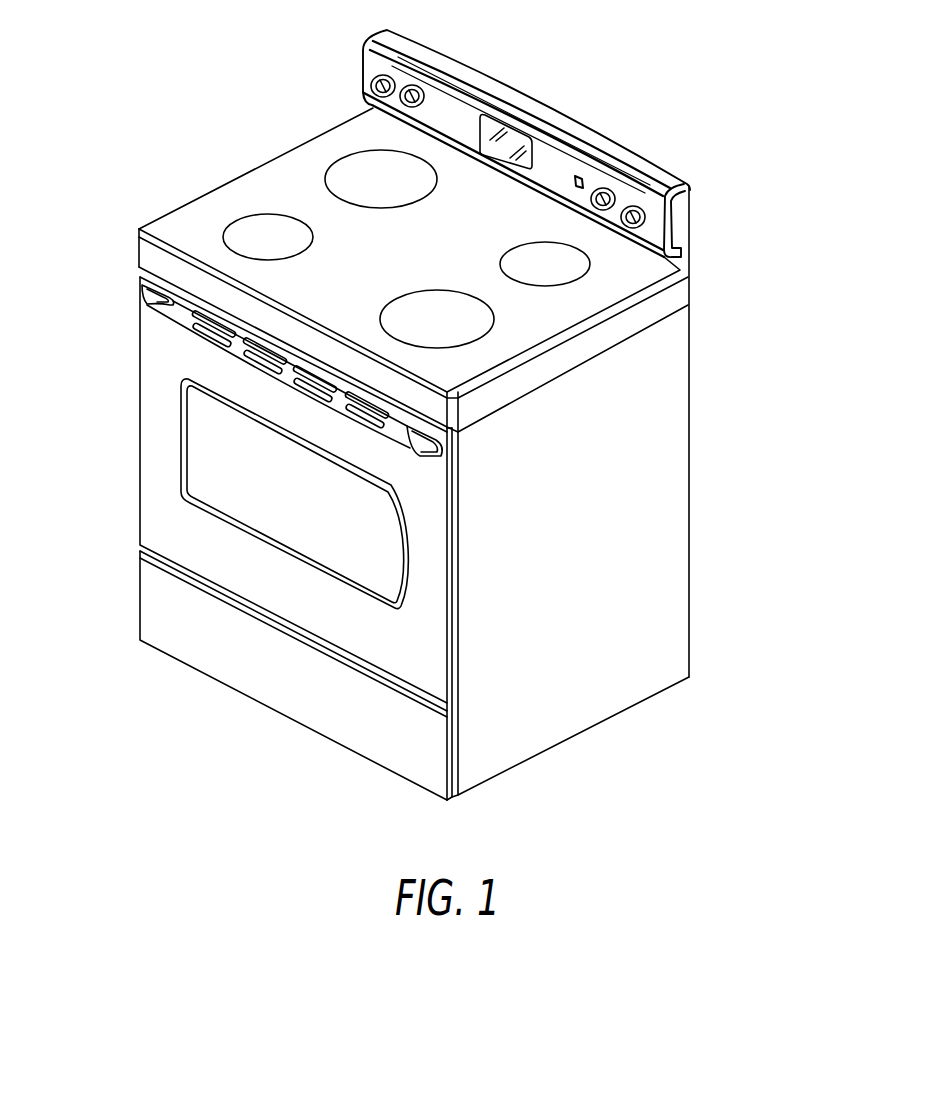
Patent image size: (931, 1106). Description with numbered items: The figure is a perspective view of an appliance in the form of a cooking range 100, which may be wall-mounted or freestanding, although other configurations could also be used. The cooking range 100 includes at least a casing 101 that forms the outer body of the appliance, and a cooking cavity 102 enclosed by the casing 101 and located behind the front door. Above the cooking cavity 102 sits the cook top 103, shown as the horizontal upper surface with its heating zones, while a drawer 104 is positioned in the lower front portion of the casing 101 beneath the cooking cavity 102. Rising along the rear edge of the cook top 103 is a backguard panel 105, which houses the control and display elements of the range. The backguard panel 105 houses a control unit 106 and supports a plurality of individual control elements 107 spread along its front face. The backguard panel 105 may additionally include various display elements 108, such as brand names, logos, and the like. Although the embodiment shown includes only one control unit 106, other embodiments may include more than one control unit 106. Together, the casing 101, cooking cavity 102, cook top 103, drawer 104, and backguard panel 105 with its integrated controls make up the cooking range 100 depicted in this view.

The cooking range 100 is at (690, 370).
The casing 101 is at (645, 557).
The cooking cavity 102 is at (152, 380).
The cook top 103 is at (252, 206).
The drawer 104 is at (158, 588).
The backguard panel 105 is at (675, 180).
The control unit 106 is at (512, 131).
The control elements 107 is at (370, 75).
The display elements 108 is at (582, 176).